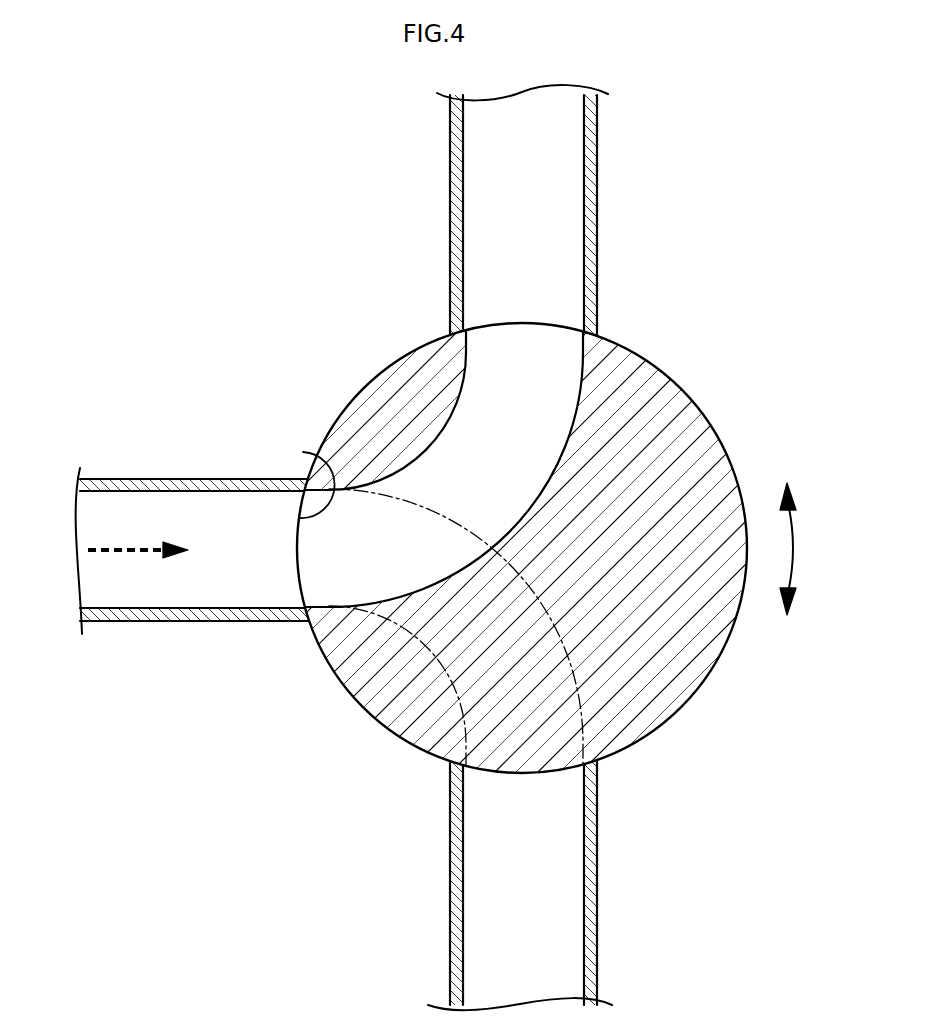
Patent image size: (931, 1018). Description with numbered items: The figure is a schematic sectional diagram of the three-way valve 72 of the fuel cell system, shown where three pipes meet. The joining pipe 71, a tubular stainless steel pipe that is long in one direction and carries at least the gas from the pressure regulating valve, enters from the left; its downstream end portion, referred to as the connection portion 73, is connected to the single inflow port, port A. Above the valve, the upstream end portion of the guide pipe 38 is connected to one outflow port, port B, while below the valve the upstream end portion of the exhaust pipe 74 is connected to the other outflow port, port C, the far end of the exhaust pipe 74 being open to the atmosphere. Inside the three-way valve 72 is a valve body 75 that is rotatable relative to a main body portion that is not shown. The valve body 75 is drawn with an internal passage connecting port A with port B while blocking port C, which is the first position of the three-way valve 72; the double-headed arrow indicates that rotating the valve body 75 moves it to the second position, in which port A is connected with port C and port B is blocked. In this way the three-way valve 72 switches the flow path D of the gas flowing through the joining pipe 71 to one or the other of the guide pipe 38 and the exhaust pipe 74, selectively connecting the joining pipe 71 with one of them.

The guide pipe 38 is at (598, 188).
The joining pipe 71 is at (188, 479).
The three-way valve 72 is at (693, 713).
The connection portion 73 is at (318, 450).
The exhaust pipe 74 is at (448, 888).
The valve body 75 is at (657, 383).
The port A is at (300, 553).
The port B is at (516, 322).
The port C is at (517, 773).
The flow path D is at (214, 589).